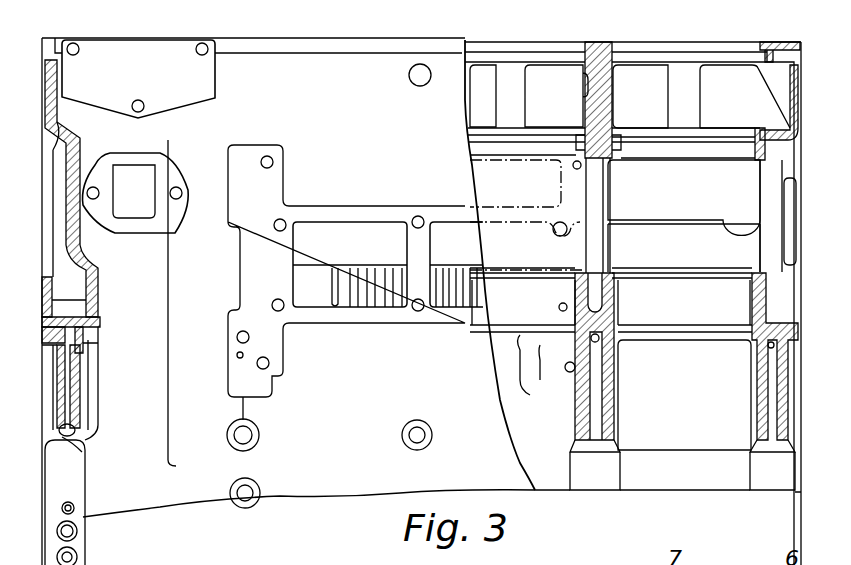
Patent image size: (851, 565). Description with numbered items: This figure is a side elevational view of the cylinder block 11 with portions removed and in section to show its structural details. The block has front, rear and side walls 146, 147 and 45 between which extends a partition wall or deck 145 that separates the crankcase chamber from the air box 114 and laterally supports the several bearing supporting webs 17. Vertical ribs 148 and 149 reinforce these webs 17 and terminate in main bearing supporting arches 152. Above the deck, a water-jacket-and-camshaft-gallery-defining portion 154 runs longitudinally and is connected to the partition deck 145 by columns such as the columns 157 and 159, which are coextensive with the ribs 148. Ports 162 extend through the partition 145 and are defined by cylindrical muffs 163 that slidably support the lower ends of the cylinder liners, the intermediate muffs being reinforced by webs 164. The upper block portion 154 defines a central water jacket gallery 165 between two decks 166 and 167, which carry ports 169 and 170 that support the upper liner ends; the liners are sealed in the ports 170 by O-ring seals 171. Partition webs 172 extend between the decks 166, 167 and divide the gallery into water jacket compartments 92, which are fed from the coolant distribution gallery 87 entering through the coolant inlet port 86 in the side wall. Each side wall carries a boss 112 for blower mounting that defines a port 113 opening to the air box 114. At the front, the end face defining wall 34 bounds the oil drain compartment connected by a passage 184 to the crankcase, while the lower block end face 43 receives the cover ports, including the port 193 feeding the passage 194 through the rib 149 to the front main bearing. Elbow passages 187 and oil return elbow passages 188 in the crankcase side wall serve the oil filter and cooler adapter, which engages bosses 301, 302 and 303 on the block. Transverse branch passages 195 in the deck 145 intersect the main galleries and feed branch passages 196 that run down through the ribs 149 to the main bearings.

The cylinder head 11 is at (332, 37).
The cylinder jacket compartment 92 is at (473, 70).
The side wall 45 is at (492, 456).
The coolant inlet port 86 is at (150, 175).
The coolant distribution gallery 87 is at (145, 210).
The boss 112 is at (258, 258).
The port 113 is at (440, 222).
The air box 114 is at (318, 232).
The cylinder muff 163 is at (375, 282).
The web 164 is at (334, 297).
The boss 302 is at (243, 490).
The boss 303 is at (417, 422).
The front wall 146 is at (66, 250).
The end face defining wall 34 is at (88, 278).
The passage 184 is at (70, 294).
The port 193 is at (66, 340).
The passage 194 is at (66, 362).
The vertical rib 148 is at (68, 386).
The bearing supporting web 17 is at (70, 410).
The vertical rib 149 is at (78, 428).
The lower block end face 43 is at (40, 470).
The boss 301 is at (80, 517).
The oil return elbow passage 188 is at (78, 532).
The elbow passage 187 is at (78, 557).
The branch passage 195 is at (236, 338).
The central water jacket gallery 165 is at (483, 100).
The port 169 is at (572, 60).
The water-jacket-and-camshaft-gallery-defining portion 154 is at (612, 48).
The partition web 172 is at (607, 113).
The O-ring seal 171 is at (557, 142).
The deck 167 is at (762, 160).
The deck 166 is at (790, 46).
The port 170 is at (547, 150).
The column 157 is at (613, 206).
The rear wall 147 is at (760, 160).
The column 159 is at (760, 222).
The partition wall or deck 145 is at (612, 317).
The main bearing supporting arch 152 is at (620, 454).
The branch passage 196 is at (592, 378).
The port 162 is at (552, 338).